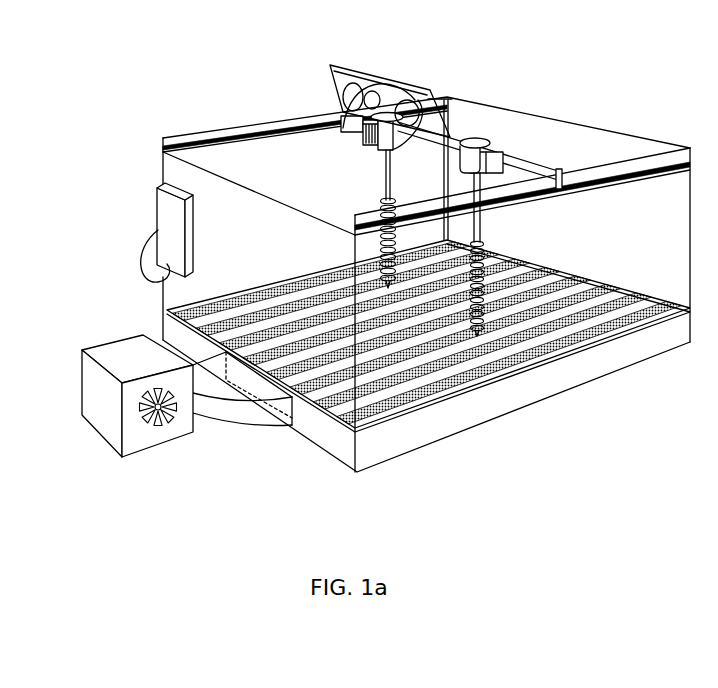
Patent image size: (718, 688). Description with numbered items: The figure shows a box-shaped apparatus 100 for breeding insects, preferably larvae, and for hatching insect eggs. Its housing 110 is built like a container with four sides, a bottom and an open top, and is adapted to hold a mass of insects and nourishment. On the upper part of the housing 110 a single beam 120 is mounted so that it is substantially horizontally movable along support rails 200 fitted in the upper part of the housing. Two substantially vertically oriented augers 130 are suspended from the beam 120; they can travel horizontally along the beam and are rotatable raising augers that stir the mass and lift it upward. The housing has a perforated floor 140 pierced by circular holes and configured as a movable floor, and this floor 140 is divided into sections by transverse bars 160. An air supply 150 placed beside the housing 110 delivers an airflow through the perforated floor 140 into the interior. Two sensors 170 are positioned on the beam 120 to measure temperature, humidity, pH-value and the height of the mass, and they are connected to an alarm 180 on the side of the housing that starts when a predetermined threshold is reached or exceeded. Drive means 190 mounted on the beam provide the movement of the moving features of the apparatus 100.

The apparatus 100 is at (396, 269).
The housing 110 is at (297, 186).
The beam 120 is at (538, 165).
The auger 130 is at (487, 240).
The perforated floor 140 is at (432, 383).
The air supply 150 is at (187, 428).
The transverse bars 160 is at (523, 367).
The sensor 170 is at (482, 158).
The alarm 180 is at (160, 231).
The drive means 190 is at (462, 152).
The support rails 200 is at (608, 176).